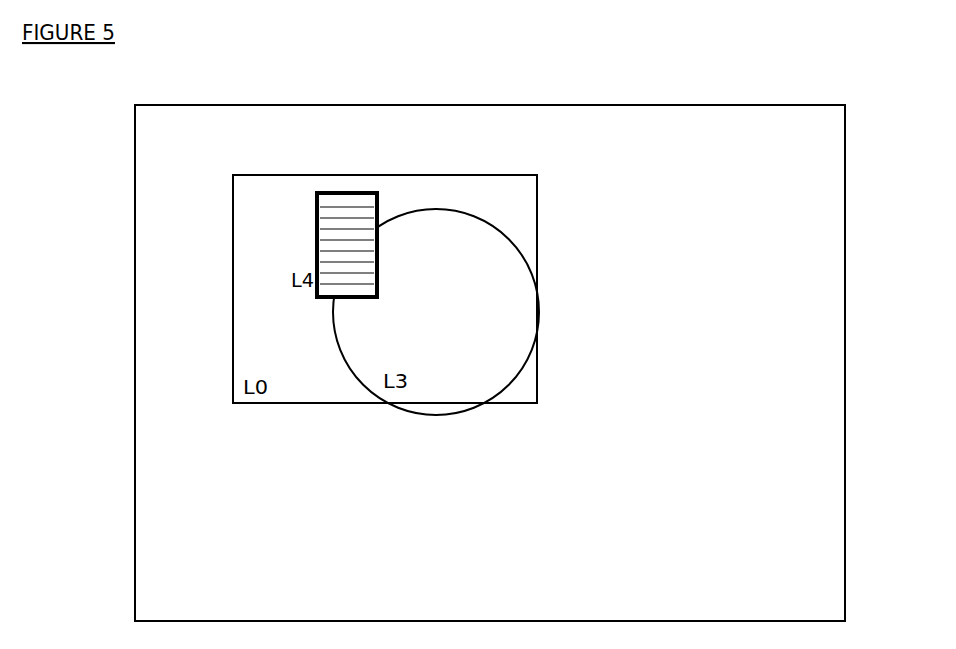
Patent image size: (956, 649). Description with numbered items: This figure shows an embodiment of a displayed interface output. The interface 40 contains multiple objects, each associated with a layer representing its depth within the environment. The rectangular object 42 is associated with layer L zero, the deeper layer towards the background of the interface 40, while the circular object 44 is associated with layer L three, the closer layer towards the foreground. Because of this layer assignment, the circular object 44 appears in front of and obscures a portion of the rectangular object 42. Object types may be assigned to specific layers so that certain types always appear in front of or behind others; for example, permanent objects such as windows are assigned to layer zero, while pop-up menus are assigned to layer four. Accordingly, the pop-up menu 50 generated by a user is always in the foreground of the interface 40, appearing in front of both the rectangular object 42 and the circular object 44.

The interface 40 is at (490, 363).
The rectangular object 42 is at (232, 293).
The circular object 44 is at (436, 312).
The pop-up menu 50 is at (337, 231).